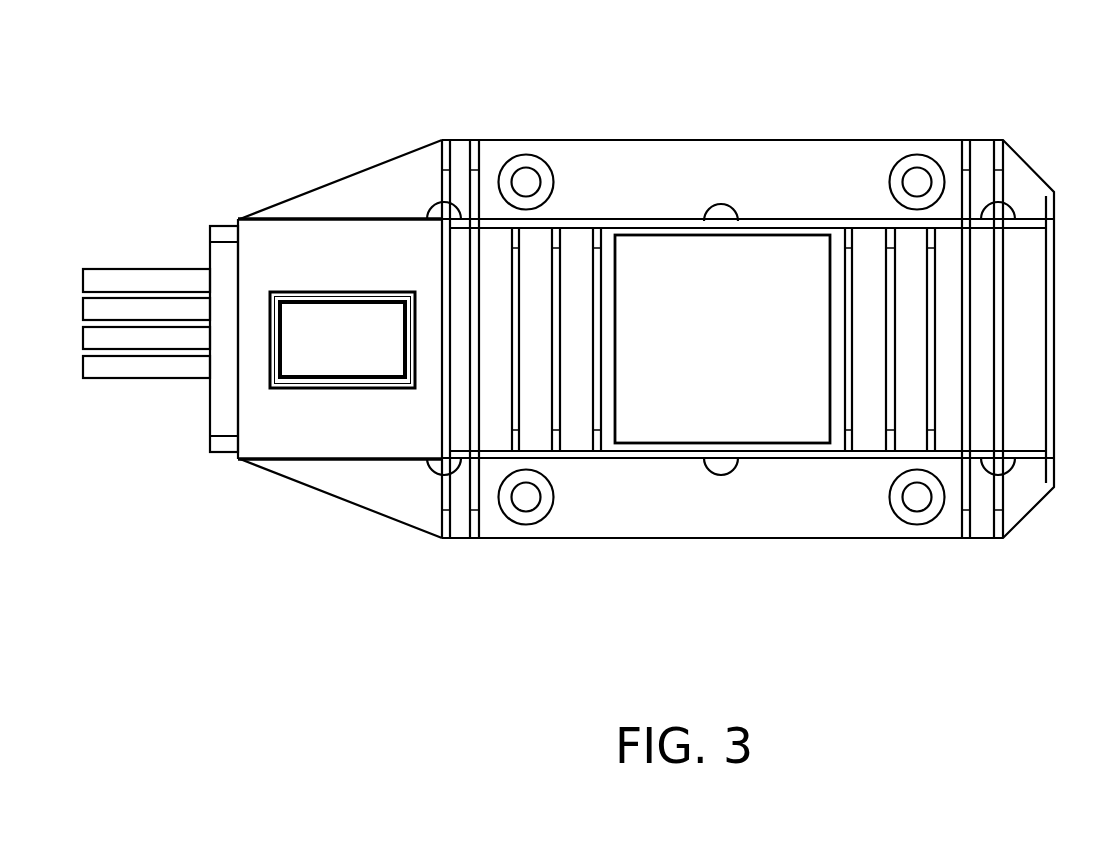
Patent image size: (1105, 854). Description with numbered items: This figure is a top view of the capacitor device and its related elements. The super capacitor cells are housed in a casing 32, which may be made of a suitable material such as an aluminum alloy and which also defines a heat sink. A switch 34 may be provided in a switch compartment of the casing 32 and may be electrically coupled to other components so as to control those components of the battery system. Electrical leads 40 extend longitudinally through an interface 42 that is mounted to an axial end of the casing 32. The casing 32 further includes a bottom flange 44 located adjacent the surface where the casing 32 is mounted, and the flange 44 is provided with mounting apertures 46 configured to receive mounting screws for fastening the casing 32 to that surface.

The casing 32 is at (648, 523).
The switch 34 is at (342, 339).
The electrical leads 40 is at (132, 378).
The interface 42 is at (210, 436).
The bottom flange 44 is at (767, 158).
The mounting apertures 46 is at (526, 182).